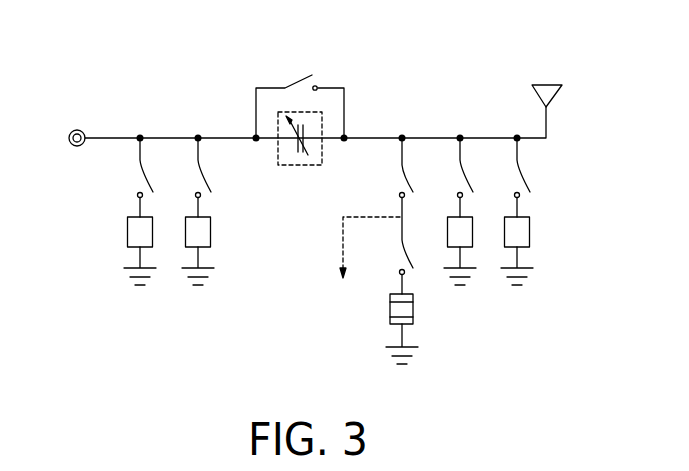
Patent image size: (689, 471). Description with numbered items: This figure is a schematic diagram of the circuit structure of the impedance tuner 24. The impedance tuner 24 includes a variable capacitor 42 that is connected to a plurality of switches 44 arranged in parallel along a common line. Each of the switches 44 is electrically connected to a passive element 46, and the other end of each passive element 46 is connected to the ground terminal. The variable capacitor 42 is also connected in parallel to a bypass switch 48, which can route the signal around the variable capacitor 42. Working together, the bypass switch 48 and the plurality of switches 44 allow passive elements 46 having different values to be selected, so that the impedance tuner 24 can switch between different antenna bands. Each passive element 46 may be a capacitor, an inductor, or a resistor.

The impedance tuner 24 is at (62, 76).
The variable capacitor 42 is at (297, 167).
The switch 44 is at (526, 173).
The passive element 46 is at (531, 232).
The bypass switch 48 is at (287, 80).